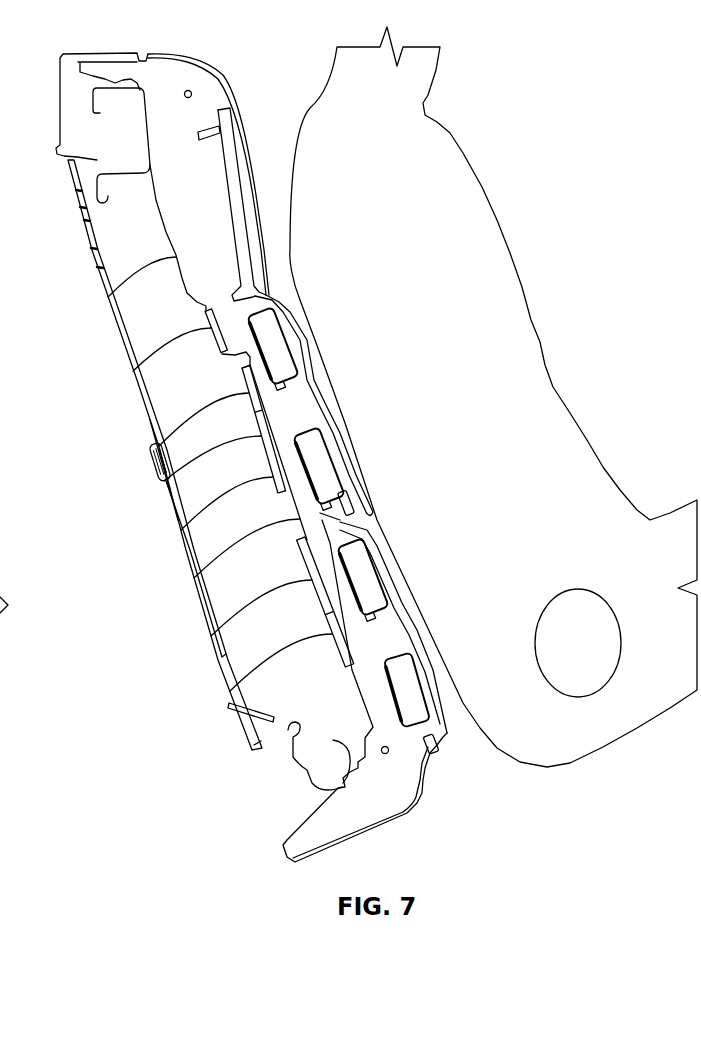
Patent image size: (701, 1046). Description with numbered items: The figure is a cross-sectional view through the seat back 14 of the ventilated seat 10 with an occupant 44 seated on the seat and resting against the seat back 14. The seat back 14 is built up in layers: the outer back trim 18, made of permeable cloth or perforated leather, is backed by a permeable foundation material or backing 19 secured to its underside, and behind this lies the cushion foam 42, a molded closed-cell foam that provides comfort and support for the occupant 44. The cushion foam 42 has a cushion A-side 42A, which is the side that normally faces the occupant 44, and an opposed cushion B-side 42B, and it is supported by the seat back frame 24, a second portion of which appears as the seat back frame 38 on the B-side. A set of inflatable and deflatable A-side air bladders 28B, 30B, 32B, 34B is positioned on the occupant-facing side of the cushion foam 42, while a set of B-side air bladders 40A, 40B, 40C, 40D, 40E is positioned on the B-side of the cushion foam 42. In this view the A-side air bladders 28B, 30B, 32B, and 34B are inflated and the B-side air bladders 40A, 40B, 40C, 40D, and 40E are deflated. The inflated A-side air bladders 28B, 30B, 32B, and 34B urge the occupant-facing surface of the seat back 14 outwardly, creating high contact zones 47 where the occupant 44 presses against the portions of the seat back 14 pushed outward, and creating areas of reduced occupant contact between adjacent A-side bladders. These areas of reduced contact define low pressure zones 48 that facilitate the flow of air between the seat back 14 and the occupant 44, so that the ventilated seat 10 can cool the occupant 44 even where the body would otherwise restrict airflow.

The ventilated seat 10 is at (60, 46).
The seat back 14 is at (168, 77).
The back trim 18 is at (222, 88).
The backing 19 is at (231, 126).
The seat back frame 24 is at (108, 297).
The A-side air bladder 28B is at (270, 327).
The A-side air bladder 30B is at (310, 447).
The A-side air bladder 32B is at (360, 560).
The A-side air bladder 34B is at (412, 680).
The seat back frame 38 is at (143, 401).
The B-side air bladder 40A is at (133, 371).
The B-side air bladder 40B is at (159, 446).
The B-side air bladder 40C is at (181, 530).
The B-side air bladder 40D is at (211, 636).
The B-side air bladder 40E is at (230, 691).
The cushion foam 42 is at (164, 481).
The cushion A-side 42A is at (302, 395).
The cushion B-side 42B is at (194, 578).
The occupant 44 is at (563, 752).
The high contact zones 47 is at (300, 348).
The low pressure zones 48 is at (322, 404).